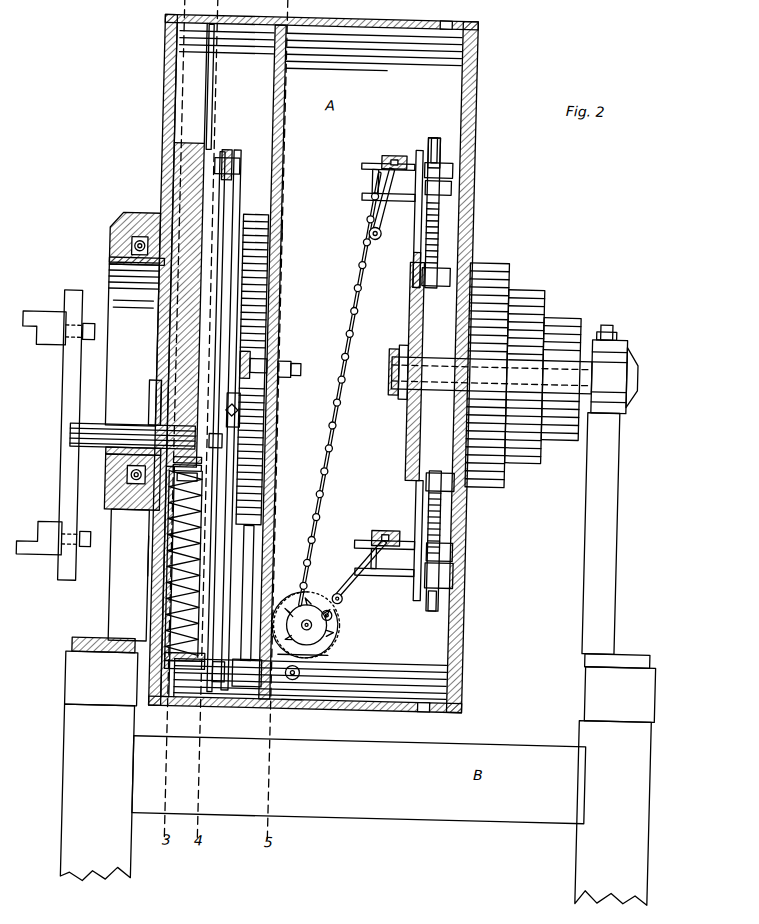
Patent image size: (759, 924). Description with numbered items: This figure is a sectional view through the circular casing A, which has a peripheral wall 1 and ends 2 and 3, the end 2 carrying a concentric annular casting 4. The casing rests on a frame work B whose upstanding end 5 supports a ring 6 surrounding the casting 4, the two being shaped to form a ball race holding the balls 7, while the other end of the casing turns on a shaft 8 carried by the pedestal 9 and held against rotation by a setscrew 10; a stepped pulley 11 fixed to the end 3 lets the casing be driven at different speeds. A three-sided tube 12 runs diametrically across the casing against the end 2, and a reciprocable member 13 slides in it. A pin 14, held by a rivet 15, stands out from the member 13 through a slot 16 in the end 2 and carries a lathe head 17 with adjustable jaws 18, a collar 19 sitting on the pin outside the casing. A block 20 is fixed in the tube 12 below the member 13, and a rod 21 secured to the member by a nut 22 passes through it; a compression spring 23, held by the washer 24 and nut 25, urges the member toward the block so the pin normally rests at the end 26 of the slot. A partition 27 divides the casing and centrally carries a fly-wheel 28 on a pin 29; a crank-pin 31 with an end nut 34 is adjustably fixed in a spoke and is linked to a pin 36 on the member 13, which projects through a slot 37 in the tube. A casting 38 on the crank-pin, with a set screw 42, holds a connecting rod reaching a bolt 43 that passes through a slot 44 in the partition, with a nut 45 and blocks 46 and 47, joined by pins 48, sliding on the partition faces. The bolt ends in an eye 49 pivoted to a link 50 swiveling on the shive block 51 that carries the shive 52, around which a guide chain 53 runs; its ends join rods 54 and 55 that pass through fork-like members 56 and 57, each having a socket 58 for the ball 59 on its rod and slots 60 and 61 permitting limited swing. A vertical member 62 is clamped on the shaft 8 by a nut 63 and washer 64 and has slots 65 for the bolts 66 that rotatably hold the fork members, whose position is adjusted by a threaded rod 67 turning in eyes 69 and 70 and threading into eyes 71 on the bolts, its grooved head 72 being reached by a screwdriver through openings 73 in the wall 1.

The peripheral wall 1 is at (314, 356).
The end 2 is at (157, 96).
The end 3 is at (470, 75).
The annular casting 4 is at (107, 265).
The upstanding end 5 is at (152, 560).
The ring 6 is at (118, 218).
The balls 7 is at (135, 272).
The shaft 8 is at (392, 366).
The pedestal 9 is at (618, 659).
The setscrew 10 is at (607, 320).
The stepped pulley 11 is at (540, 290).
The tube 12 is at (190, 83).
The reciprocable member 13 is at (184, 146).
The pin 14 is at (93, 429).
The rivet 15 is at (160, 415).
The slot 16 is at (160, 326).
The lathe head 17 is at (63, 415).
The adjustable jaws 18 is at (36, 350).
The collar 19 is at (150, 420).
The block 20 is at (204, 482).
The rod 21 is at (204, 472).
The nut 22 is at (204, 464).
The compression spring 23 is at (172, 628).
The washer 24 is at (172, 660).
The nut 25 is at (172, 668).
The end of the slot 26 is at (128, 575).
The partition 27 is at (279, 150).
The fly-wheel 28 is at (280, 236).
The pin 29 is at (301, 368).
The crank-pin 31 is at (221, 360).
The end nut 34 is at (215, 441).
The pin 36 is at (235, 162).
The slot 37 is at (206, 100).
The casting 38 is at (242, 400).
The set screw 42 is at (278, 417).
The bolt 43 is at (196, 700).
The slot 44 is at (237, 582).
The nut 45 is at (232, 709).
The block 46 is at (246, 592).
The block 47 is at (300, 709).
The pins 48 is at (247, 672).
The eye 49 is at (305, 680).
The link 50 is at (335, 655).
The shive block 51 is at (346, 628).
The shive 52 is at (312, 605).
The guide chain 53 is at (336, 441).
The rod 54 is at (370, 212).
The rod 55 is at (366, 580).
The fork-like member 56 is at (362, 162).
The fork-like member 57 is at (365, 539).
The socket 58 is at (392, 154).
The ball 59 is at (388, 154).
The slot 60 is at (370, 172).
The slot 61 is at (386, 199).
The vertical member 62 is at (408, 314).
The nut 63 is at (393, 347).
The washer 64 is at (403, 397).
The slots 65 is at (411, 247).
The bolts 66 is at (436, 210).
The threaded rod 67 is at (436, 196).
The eye 69 is at (448, 165).
The eye 70 is at (448, 272).
The eyes 71 is at (447, 185).
The groove 72 is at (430, 135).
The openings 73 is at (438, 18).